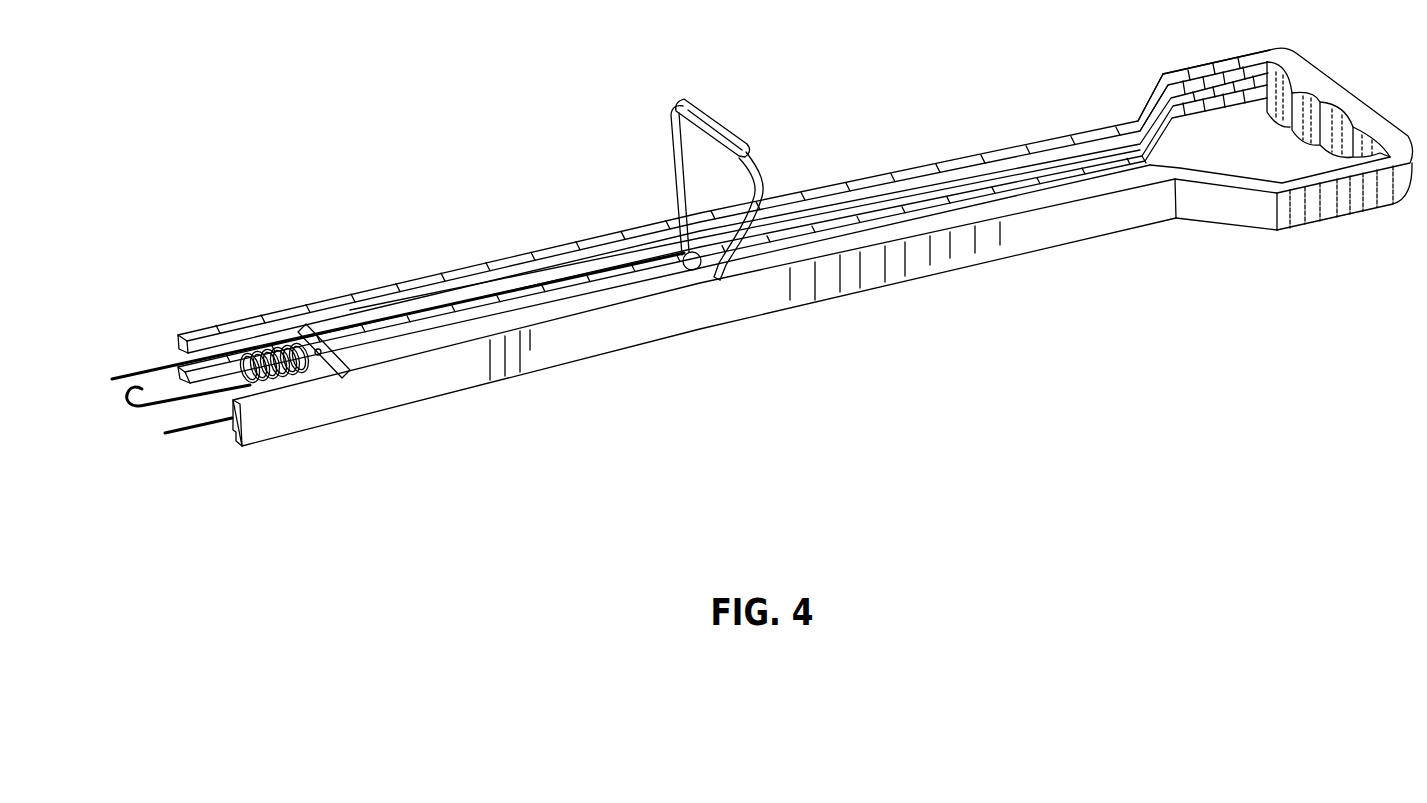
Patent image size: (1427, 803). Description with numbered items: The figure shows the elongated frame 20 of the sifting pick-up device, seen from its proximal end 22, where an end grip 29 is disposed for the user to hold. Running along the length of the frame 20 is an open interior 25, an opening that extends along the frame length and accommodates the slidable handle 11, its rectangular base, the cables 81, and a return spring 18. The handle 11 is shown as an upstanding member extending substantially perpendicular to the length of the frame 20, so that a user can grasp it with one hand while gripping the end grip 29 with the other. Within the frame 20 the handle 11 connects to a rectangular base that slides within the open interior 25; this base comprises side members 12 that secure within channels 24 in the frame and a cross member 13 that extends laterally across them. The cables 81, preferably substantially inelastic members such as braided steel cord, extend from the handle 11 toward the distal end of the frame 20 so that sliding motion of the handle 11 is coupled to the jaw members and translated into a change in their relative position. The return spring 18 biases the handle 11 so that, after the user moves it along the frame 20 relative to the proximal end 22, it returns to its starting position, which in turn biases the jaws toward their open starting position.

The slidable handle 11 is at (697, 108).
The side members 12 is at (445, 290).
The cross member 13 is at (322, 328).
The return spring 18 is at (246, 366).
The elongated frame 20 is at (893, 346).
The proximal end 22 is at (1118, 123).
The channels 24 is at (948, 175).
The open interior 25 is at (875, 220).
The grip 29 is at (1322, 80).
The cables 81 is at (113, 377).